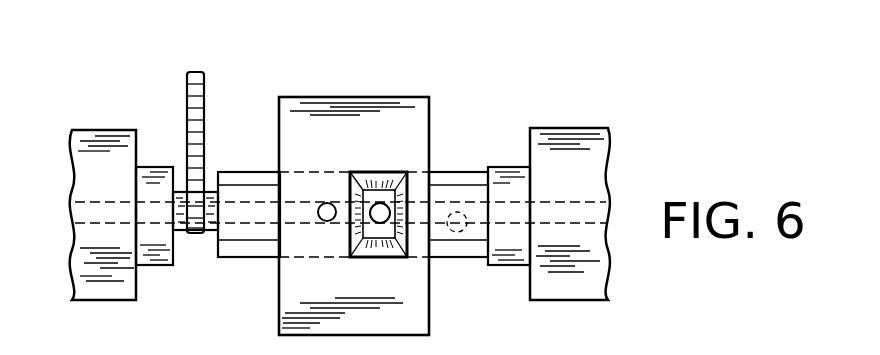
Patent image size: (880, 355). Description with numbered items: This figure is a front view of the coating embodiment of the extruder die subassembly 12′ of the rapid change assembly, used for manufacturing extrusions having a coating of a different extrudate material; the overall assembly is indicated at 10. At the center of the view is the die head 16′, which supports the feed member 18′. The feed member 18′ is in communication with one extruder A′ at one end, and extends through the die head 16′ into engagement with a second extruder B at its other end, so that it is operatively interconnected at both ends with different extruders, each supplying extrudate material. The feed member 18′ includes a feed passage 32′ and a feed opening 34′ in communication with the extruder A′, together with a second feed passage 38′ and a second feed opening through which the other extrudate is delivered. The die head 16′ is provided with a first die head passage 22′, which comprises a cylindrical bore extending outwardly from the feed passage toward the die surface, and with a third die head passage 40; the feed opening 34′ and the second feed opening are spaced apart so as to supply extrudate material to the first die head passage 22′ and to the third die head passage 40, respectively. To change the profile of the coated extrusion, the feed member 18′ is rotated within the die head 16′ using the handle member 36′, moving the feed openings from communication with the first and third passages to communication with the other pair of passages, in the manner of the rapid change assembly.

The housing block 10 is at (340, 78).
The extruder die subassembly 12′ is at (519, 207).
The die head 16′ is at (412, 307).
The feed member 18′ is at (462, 170).
The first die head passage 22′ is at (320, 204).
The feed passage 32′ is at (262, 203).
The feed opening 34′ is at (324, 222).
The handle member 36′ is at (187, 110).
The pin hole 38′ is at (460, 231).
The third die head passage 40 is at (378, 222).
The extruder A′ is at (110, 300).
The second extruder B is at (586, 300).